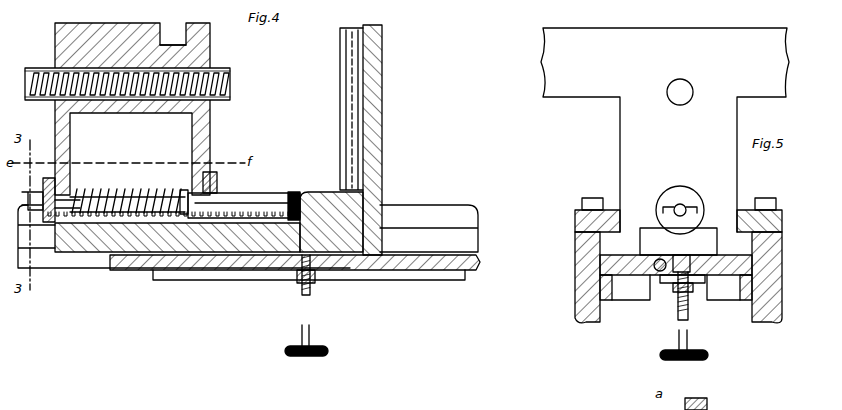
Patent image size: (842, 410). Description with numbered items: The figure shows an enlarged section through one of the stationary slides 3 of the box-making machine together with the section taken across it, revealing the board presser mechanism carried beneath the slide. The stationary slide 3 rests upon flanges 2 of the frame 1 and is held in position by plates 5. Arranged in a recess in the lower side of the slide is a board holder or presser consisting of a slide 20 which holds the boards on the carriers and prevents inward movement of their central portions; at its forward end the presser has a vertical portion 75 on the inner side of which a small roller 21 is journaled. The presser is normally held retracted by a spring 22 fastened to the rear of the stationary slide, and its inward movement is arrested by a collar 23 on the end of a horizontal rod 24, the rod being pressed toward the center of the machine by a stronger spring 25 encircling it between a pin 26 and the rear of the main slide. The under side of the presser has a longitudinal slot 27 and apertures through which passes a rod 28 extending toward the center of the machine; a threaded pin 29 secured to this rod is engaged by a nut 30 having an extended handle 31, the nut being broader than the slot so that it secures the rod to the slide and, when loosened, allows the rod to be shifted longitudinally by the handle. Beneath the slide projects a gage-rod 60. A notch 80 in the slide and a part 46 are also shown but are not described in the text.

In FIG. 5, the frame 1 is at (580, 280).
In FIG. 5, the flanges 2 is at (640, 285).
In FIG. 4, the stationary slide 3 is at (120, 109).
In FIG. 5, the stationary slide 3 is at (665, 130).
In FIG. 4, the plates 5 is at (429, 228).
In FIG. 5, the plates 5 is at (590, 216).
In FIG. 4, the presser slide 20 is at (320, 205).
In FIG. 4, the roller 21 is at (345, 85).
In FIG. 4, the spring 22 is at (292, 215).
In FIG. 4, the collar 23 is at (62, 197).
In FIG. 5, the collar 23 is at (700, 196).
In FIG. 4, the horizontal rod 24 is at (197, 205).
In FIG. 5, the horizontal rod 24 is at (676, 208).
In FIG. 4, the spring 25 is at (100, 195).
In FIG. 4, the pin 26 is at (182, 200).
In FIG. 4, the longitudinal slot 27 is at (232, 272).
In FIG. 5, the longitudinal slot 27 is at (700, 283).
In FIG. 4, the rod 28 is at (480, 263).
In FIG. 5, the rod 28 is at (676, 268).
In FIG. 4, the threaded pin 29 is at (300, 282).
In FIG. 5, the threaded pin 29 is at (676, 290).
In FIG. 4, the nut 30 is at (315, 280).
In FIG. 5, the nut 30 is at (692, 292).
In FIG. 4, the extended handle 31 is at (312, 340).
In FIG. 5, the extended handle 31 is at (690, 344).
In FIG. 5, the key 46 is at (707, 402).
In FIG. 5, the gage-rod 60 is at (655, 262).
In FIG. 4, the vertical portion 75 is at (376, 105).
In FIG. 4, the notch 80 is at (173, 55).